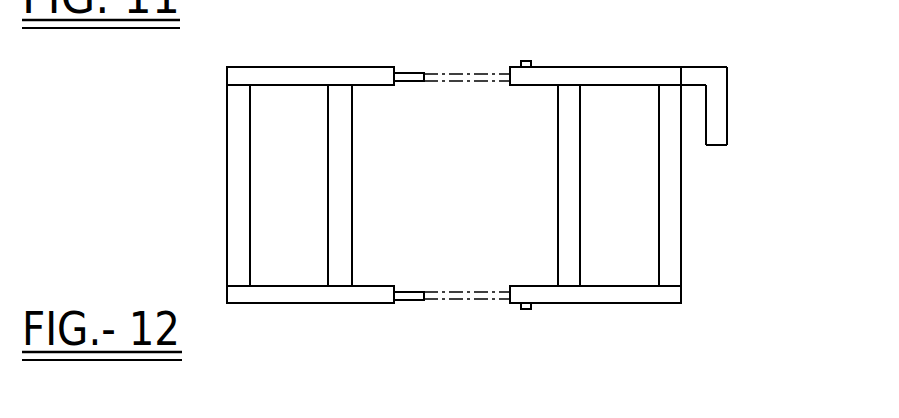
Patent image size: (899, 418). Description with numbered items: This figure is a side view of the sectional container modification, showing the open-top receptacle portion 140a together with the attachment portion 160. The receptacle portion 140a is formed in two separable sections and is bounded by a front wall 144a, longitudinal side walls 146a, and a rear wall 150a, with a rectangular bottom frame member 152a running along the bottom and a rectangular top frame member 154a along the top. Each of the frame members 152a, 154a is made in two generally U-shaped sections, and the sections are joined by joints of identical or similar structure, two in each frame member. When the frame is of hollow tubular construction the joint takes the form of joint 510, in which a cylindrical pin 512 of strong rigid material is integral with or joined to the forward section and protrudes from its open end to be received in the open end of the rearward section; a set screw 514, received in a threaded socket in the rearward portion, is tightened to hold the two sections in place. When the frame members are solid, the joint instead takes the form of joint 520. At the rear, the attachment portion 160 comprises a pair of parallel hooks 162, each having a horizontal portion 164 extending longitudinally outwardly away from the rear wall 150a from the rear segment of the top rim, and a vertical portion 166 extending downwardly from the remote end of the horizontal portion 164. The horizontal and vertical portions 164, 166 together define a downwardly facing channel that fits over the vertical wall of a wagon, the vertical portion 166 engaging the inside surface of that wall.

The receptacle portion 140a is at (221, 108).
The front wall 144a is at (228, 187).
The longitudinal side wall 146a is at (560, 190).
The rear wall 150a is at (682, 207).
The bottom frame member 152a is at (335, 303).
The top frame member 154a is at (352, 67).
The joint 510 is at (392, 52).
The joint 520 is at (425, 320).
The cylindrical pin 512 is at (405, 73).
The set screw 514 is at (526, 61).
The attachment portion 160 is at (781, 76).
The hook 162 is at (755, 76).
The horizontal portion 164 is at (705, 67).
The vertical portion 166 is at (722, 127).